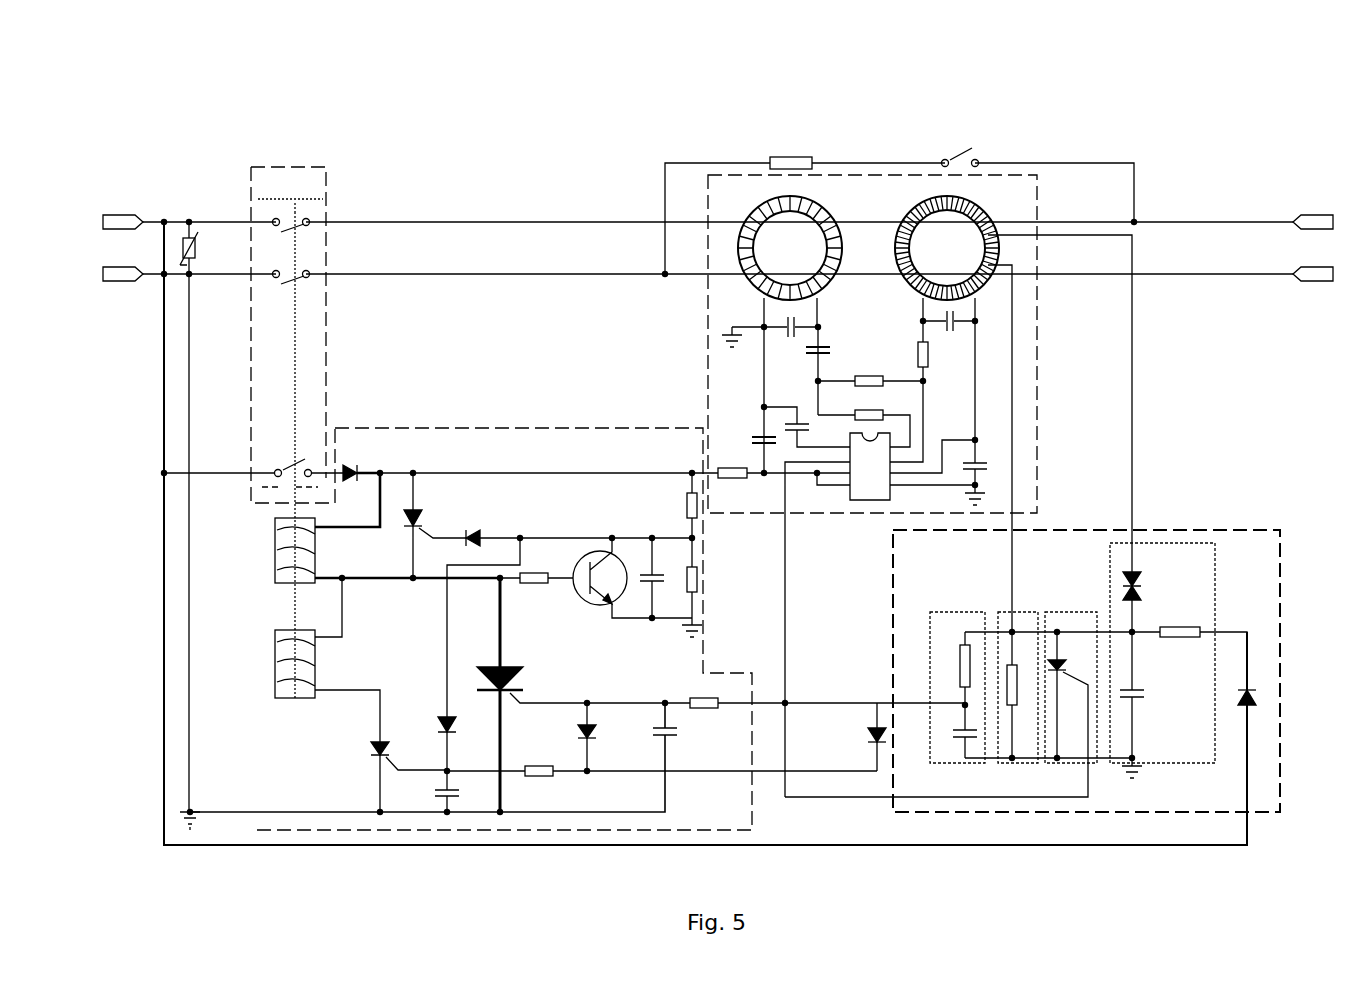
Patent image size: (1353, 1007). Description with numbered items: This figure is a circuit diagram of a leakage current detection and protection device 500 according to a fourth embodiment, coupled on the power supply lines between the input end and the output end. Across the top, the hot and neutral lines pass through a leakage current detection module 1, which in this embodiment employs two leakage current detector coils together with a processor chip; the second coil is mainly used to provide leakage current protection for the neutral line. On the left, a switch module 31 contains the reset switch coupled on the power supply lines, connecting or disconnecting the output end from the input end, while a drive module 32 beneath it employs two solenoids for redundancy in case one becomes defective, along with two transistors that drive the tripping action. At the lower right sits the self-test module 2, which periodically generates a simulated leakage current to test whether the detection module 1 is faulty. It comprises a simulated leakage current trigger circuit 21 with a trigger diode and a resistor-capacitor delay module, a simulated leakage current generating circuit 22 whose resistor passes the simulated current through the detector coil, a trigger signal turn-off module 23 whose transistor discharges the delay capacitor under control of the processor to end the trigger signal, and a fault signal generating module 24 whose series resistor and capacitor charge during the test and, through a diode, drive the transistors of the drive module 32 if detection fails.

The leakage current detection and protection device 500 is at (1326, 41).
The switch module 31 is at (295, 166).
The drive module 32 is at (595, 428).
The leakage current detection module 1 is at (1000, 175).
The self-test module 2 is at (1210, 527).
The simulated leakage current trigger circuit 21 is at (1212, 583).
The simulated leakage current generating circuit 22 is at (1022, 612).
The trigger signal turn-off module 23 is at (1060, 612).
The fault signal generating module 24 is at (950, 612).